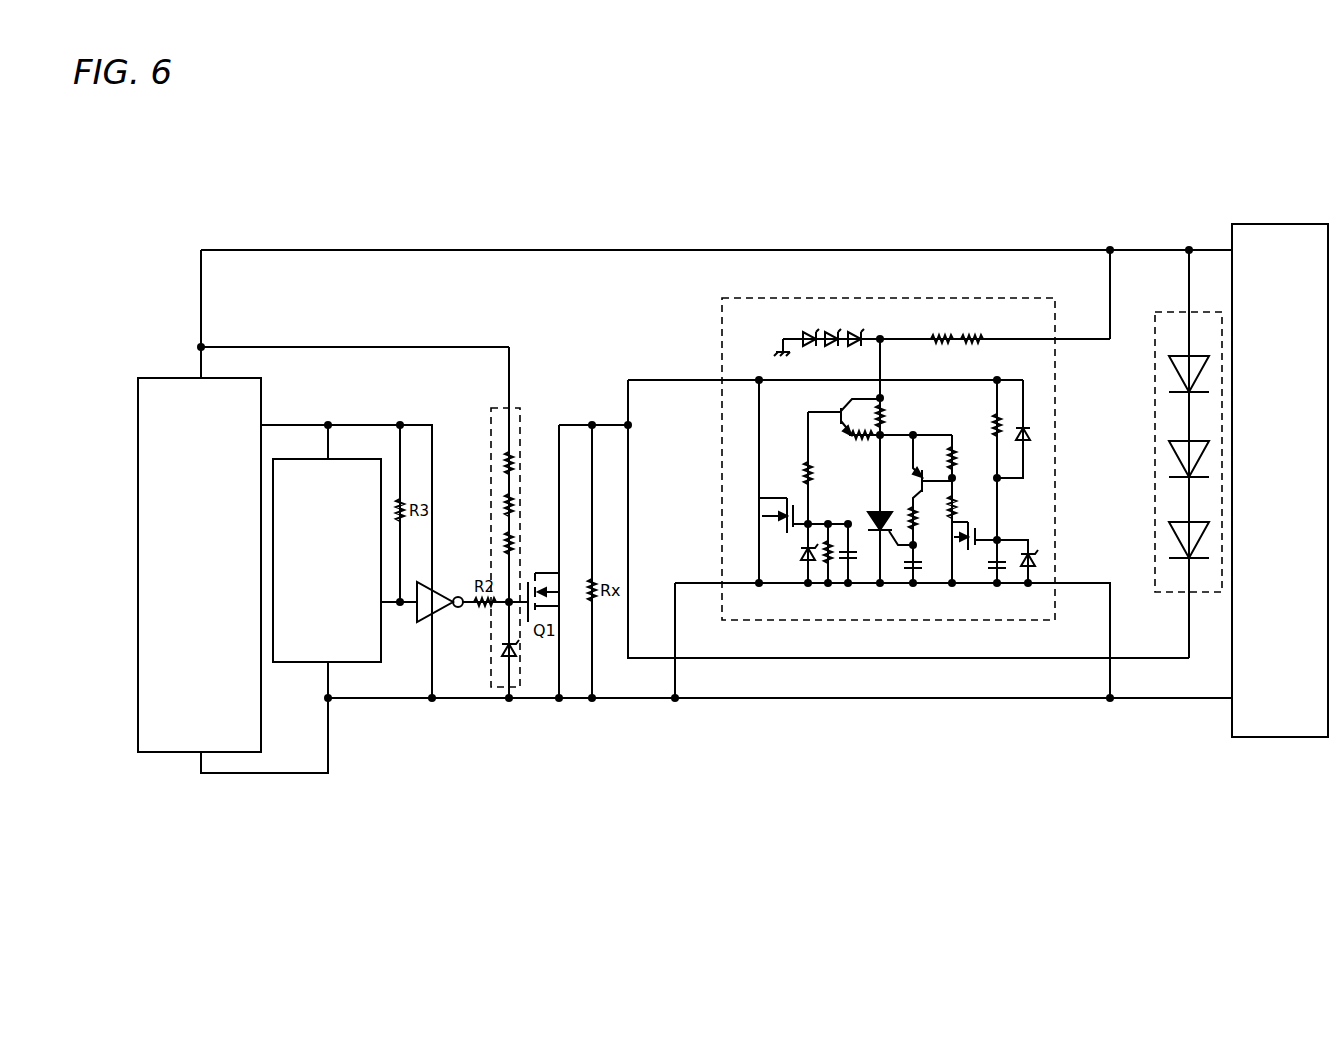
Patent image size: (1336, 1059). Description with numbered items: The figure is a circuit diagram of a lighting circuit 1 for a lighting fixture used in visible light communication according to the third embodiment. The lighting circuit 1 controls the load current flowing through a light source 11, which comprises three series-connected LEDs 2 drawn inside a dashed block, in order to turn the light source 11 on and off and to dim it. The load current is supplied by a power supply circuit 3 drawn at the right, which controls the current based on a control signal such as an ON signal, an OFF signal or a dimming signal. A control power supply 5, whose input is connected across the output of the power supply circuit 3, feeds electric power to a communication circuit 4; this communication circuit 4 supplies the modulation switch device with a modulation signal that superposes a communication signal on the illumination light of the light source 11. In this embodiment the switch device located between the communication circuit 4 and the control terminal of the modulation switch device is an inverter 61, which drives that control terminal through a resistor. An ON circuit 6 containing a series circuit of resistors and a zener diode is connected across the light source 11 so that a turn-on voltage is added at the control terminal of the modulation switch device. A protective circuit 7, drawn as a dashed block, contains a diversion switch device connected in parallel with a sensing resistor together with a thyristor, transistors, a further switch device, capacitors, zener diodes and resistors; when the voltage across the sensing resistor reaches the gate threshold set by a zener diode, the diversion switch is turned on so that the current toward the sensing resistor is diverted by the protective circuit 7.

The lighting circuit 1 is at (159, 250).
The LED 2 is at (1169, 378).
The power supply circuit 3 is at (1233, 729).
The communication circuit 4 is at (316, 459).
The control power supply 5 is at (263, 383).
The ON circuit 6 is at (497, 408).
The protective circuit 7 is at (760, 298).
The light source 11 is at (1177, 312).
The inverter 61 is at (452, 610).